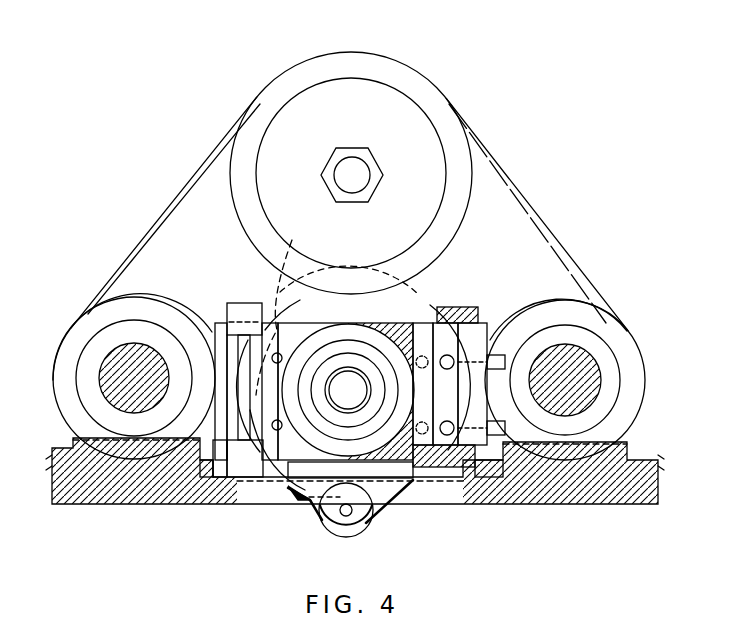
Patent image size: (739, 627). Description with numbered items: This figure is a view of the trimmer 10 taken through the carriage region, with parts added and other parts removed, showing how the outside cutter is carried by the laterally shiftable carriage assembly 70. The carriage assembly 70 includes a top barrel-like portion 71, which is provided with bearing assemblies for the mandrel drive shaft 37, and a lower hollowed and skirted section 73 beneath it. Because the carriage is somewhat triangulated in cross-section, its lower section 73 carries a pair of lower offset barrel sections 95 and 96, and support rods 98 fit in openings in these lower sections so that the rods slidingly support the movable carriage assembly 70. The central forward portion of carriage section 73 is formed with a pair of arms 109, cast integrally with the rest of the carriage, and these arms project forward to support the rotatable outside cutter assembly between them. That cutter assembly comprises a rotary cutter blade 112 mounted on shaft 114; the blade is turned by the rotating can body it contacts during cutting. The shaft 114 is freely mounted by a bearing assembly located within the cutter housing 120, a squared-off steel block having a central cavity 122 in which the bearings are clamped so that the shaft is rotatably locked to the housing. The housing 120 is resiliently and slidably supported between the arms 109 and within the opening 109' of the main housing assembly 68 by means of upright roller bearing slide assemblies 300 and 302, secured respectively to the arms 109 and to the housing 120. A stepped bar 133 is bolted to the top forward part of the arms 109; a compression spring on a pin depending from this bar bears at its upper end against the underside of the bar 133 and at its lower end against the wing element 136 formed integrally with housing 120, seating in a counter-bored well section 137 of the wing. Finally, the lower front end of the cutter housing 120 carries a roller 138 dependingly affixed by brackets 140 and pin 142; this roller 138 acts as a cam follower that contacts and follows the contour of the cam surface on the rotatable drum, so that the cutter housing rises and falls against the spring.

The belt drive assembly 10 is at (226, 108).
The carriage assembly 70 is at (393, 56).
The top barrel-like portion 71 is at (323, 70).
The shaft 37 is at (352, 166).
The barrel section 96 is at (78, 333).
The support rods 98 is at (152, 372).
The lower hollowed and skirted section 73 is at (634, 326).
The barrel section 95 is at (641, 388).
The arms 109 is at (343, 324).
The upright roller bearing slide assembly 300 is at (283, 330).
The cutter housing 120 is at (420, 342).
The central cavity 122 is at (362, 345).
The shaft 114 is at (331, 401).
The stepped bar 133 is at (245, 305).
The upright roller bearing slide assembly 302 is at (290, 256).
The main housing assembly 68 is at (143, 489).
The counter-bored well section 137 is at (212, 505).
The opening 109' is at (220, 495).
The wing element 136 is at (251, 497).
The rotary cutter blade 112 is at (307, 450).
The brackets 140 is at (351, 539).
The pin 142 is at (341, 514).
The roller 138 is at (373, 521).